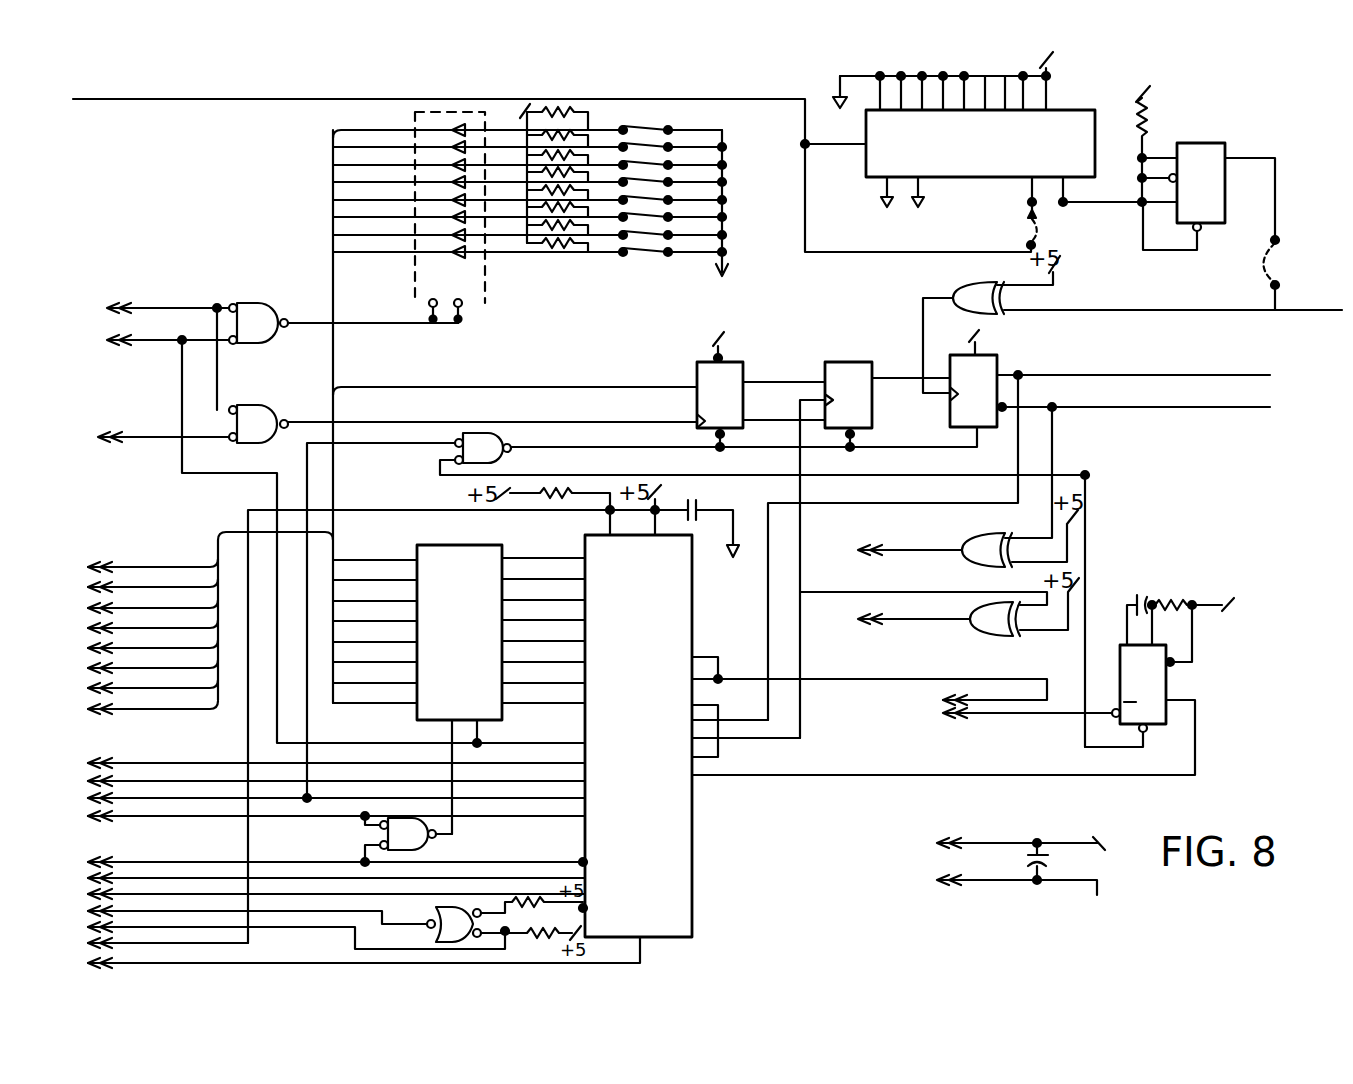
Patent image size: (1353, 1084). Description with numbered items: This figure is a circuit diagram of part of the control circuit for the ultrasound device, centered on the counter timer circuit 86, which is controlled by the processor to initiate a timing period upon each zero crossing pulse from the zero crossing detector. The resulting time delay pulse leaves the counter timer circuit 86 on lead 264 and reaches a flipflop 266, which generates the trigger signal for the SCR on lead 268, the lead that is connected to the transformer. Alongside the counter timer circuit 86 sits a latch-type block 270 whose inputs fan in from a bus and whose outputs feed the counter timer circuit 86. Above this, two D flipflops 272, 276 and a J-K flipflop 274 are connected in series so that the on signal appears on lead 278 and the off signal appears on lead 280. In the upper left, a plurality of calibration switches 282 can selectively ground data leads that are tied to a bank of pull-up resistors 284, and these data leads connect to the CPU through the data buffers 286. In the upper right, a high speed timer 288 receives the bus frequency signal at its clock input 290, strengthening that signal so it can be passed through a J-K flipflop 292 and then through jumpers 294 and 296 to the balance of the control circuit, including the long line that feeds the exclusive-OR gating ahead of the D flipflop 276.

The counter timer circuit 86 is at (693, 850).
The lead 264 is at (906, 775).
The flipflop 266 is at (1168, 689).
The lead 268 is at (977, 716).
The latch 270 is at (453, 545).
The D flipflop 272 is at (745, 366).
The J-K flipflop 274 is at (848, 362).
The D flipflop 276 is at (997, 362).
The lead 278 is at (1234, 374).
The lead 280 is at (1236, 406).
The calibration switches 282 is at (655, 122).
The pull-up resistors 284 is at (568, 115).
The data buffers 286 is at (413, 121).
The high speed timer 288 is at (1057, 110).
The clock input 290 is at (858, 147).
The J-K flipflop 292 is at (1200, 143).
The jumper 294 is at (1038, 227).
The jumper 296 is at (1280, 263).